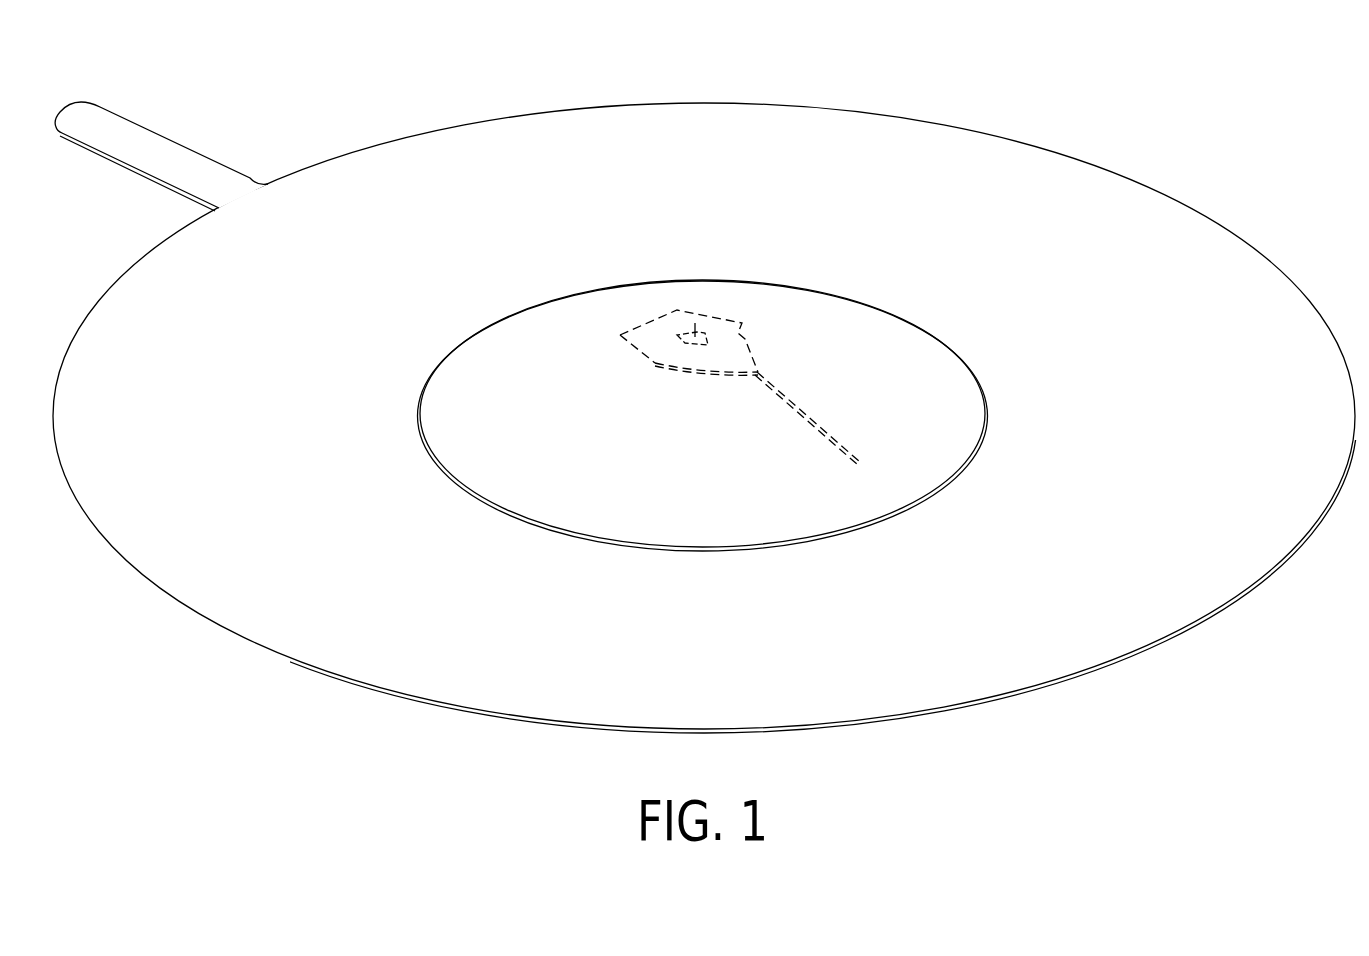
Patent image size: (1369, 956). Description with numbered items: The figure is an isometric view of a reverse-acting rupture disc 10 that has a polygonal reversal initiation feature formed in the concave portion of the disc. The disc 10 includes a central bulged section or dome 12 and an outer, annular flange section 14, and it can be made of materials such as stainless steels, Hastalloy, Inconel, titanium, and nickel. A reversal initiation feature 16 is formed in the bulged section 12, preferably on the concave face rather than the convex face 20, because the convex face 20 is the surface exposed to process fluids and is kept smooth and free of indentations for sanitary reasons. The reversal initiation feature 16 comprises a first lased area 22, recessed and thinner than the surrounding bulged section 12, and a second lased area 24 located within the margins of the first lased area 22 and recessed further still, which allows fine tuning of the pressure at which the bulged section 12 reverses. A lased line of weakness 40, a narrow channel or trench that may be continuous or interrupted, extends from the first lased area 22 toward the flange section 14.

The reverse-acting rupture disc 10 is at (1152, 142).
The bulged section 12 is at (943, 387).
The flange section 14 is at (1208, 582).
The reversal initiation feature 16 is at (714, 314).
The convex face 20 is at (708, 480).
The first lased area 22 is at (737, 356).
The second lased area 24 is at (693, 310).
The lased line of weakness 40 is at (825, 424).